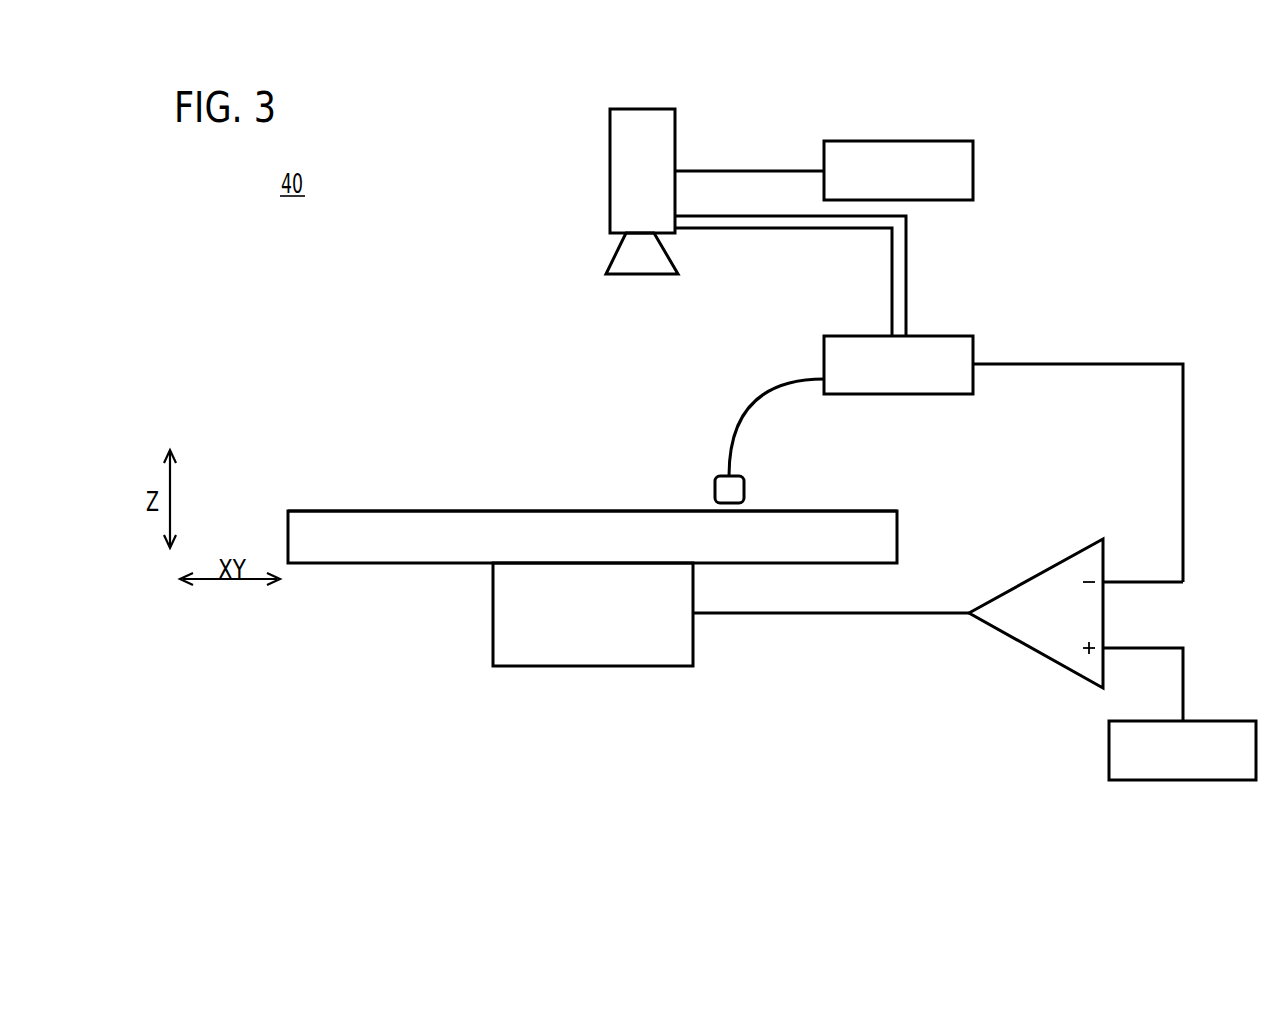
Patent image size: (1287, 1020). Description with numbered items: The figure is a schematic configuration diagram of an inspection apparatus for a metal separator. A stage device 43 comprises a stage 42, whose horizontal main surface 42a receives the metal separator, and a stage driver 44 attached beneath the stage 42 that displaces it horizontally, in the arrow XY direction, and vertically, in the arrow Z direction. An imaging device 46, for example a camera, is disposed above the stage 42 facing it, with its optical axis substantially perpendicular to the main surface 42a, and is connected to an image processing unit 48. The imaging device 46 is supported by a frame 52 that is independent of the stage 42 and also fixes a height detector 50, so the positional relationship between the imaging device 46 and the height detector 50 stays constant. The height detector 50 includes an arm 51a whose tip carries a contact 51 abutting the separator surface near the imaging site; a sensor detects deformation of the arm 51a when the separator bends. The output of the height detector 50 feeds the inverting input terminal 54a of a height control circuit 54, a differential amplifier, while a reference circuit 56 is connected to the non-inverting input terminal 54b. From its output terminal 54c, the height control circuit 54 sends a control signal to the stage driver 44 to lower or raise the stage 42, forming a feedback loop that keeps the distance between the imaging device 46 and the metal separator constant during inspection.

The stage 42 is at (884, 538).
The main surface 42a is at (333, 510).
The stage device 43 is at (386, 497).
The stage driver 44 is at (492, 623).
The imaging device 46 is at (609, 157).
The image processing unit 48 is at (921, 140).
The height detector 50 is at (926, 335).
The contact 51 is at (714, 478).
The arm 51a is at (755, 406).
The frame 52 is at (905, 251).
The height control circuit 54 is at (1060, 558).
The inverting input terminal 54a is at (1105, 580).
The non-inverting input terminal 54b is at (1105, 645).
The output terminal 54c is at (968, 614).
The reference circuit 56 is at (1222, 720).